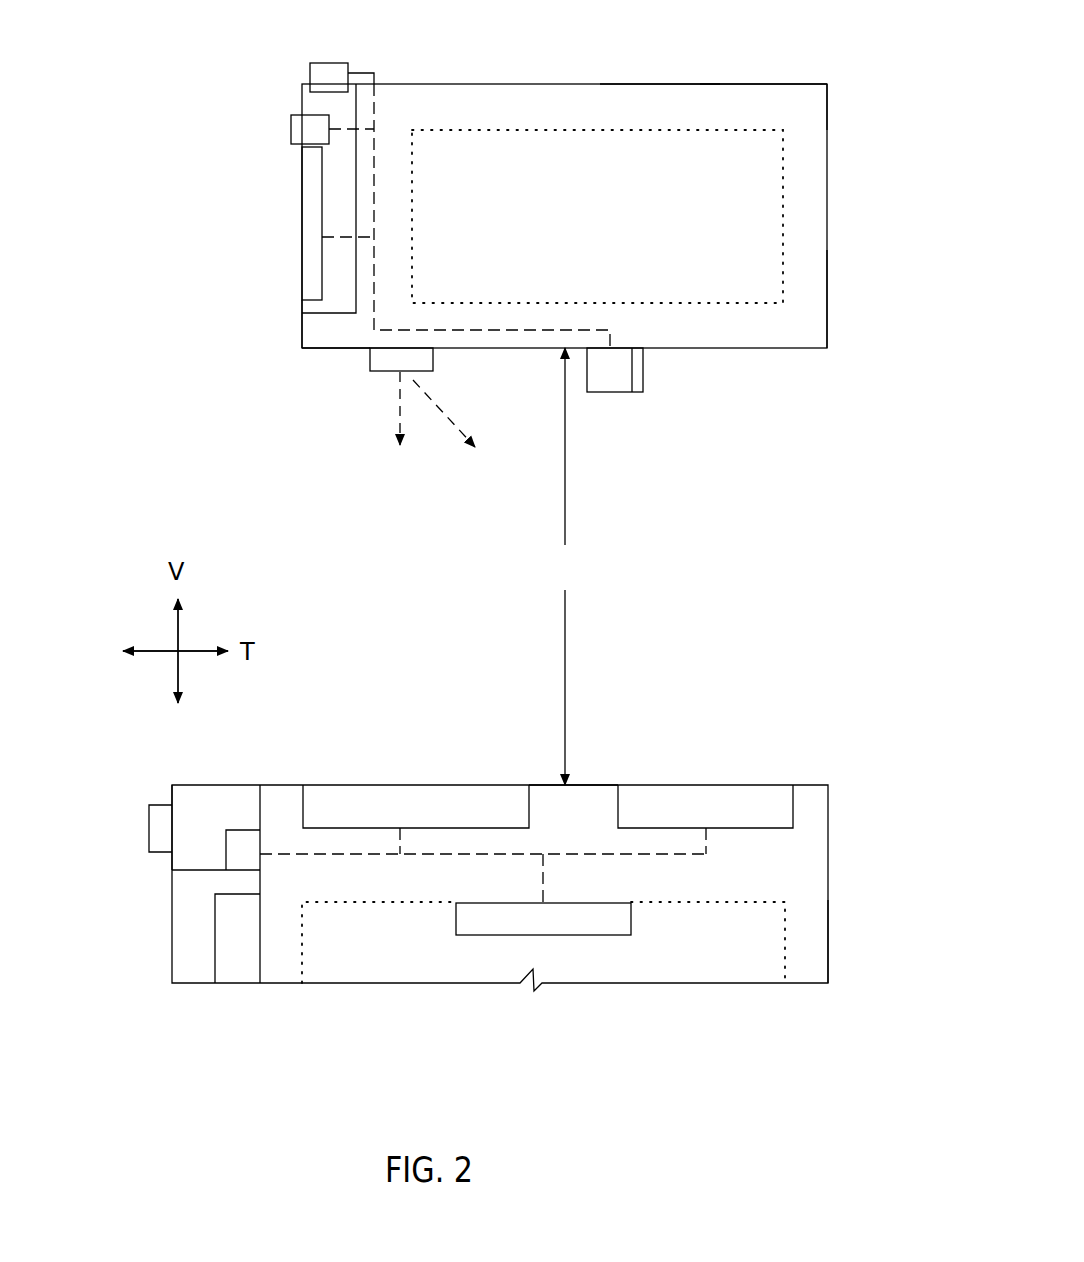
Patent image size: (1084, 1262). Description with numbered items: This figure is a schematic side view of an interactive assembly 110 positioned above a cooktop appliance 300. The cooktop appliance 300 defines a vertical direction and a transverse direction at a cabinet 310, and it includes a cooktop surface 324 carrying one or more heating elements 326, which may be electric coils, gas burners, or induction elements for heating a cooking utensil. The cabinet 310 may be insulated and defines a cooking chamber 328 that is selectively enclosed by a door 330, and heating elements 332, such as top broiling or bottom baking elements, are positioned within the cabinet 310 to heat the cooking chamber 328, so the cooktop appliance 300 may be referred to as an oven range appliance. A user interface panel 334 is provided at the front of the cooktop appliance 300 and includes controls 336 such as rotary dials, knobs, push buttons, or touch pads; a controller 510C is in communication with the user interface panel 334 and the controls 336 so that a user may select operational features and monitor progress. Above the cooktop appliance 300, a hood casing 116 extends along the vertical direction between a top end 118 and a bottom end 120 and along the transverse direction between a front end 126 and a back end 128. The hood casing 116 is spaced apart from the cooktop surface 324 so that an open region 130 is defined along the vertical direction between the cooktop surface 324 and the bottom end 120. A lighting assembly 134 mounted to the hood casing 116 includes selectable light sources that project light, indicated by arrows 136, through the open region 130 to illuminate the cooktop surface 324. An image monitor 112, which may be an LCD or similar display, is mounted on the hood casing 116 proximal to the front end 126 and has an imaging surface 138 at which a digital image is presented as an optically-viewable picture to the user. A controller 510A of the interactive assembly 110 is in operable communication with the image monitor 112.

The interactive assembly 110 is at (828, 160).
The image monitor 112 is at (302, 225).
The hood casing 116 is at (815, 100).
The top end 118 is at (702, 84).
The bottom end 120 is at (768, 350).
The front end 126 is at (297, 327).
The back end 128 is at (828, 305).
The open region 130 is at (565, 566).
The lighting assembly 134 is at (437, 363).
The arrows 136 is at (400, 408).
The imaging surface 138 is at (302, 258).
The controller 510A is at (322, 66).
The cooktop appliance 300 is at (838, 860).
The cabinet 310 is at (820, 963).
The cooktop surface 324 is at (597, 783).
The heating elements 326 is at (380, 800).
The cooking chamber 328 is at (722, 948).
The door 330 is at (243, 955).
The heating elements 332 is at (455, 918).
The user interface panel 334 is at (172, 788).
The controls 336 is at (150, 830).
The controller 510C is at (233, 858).